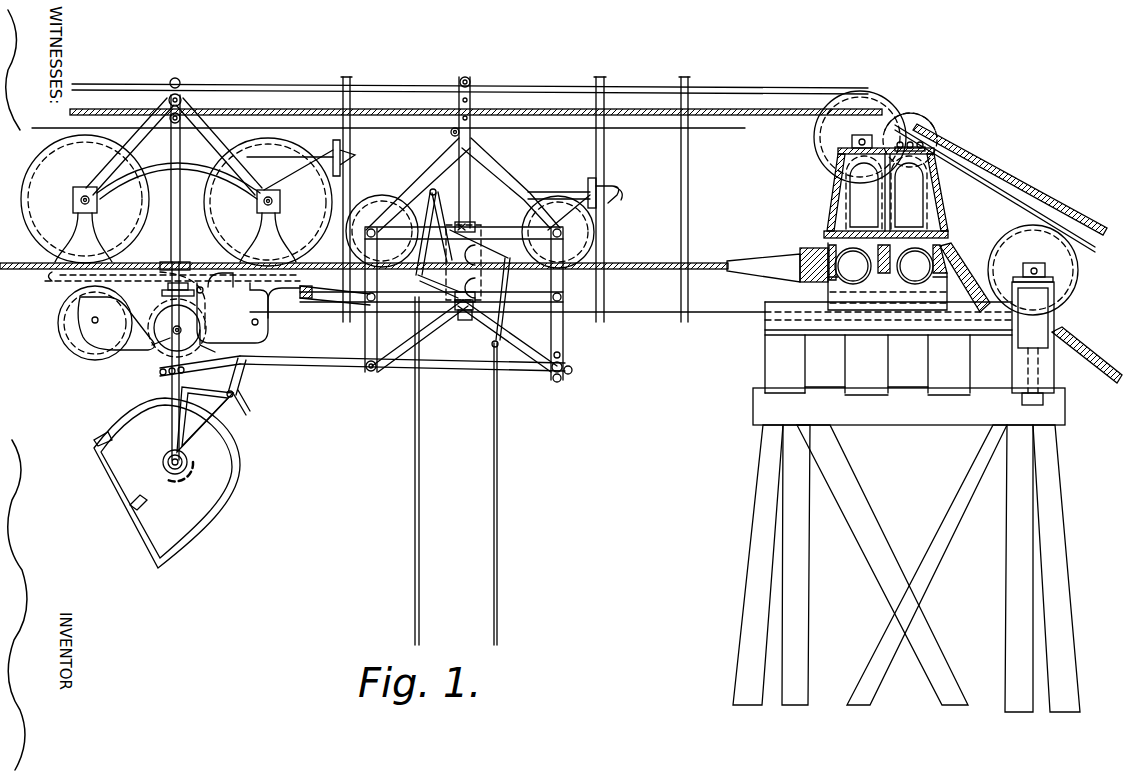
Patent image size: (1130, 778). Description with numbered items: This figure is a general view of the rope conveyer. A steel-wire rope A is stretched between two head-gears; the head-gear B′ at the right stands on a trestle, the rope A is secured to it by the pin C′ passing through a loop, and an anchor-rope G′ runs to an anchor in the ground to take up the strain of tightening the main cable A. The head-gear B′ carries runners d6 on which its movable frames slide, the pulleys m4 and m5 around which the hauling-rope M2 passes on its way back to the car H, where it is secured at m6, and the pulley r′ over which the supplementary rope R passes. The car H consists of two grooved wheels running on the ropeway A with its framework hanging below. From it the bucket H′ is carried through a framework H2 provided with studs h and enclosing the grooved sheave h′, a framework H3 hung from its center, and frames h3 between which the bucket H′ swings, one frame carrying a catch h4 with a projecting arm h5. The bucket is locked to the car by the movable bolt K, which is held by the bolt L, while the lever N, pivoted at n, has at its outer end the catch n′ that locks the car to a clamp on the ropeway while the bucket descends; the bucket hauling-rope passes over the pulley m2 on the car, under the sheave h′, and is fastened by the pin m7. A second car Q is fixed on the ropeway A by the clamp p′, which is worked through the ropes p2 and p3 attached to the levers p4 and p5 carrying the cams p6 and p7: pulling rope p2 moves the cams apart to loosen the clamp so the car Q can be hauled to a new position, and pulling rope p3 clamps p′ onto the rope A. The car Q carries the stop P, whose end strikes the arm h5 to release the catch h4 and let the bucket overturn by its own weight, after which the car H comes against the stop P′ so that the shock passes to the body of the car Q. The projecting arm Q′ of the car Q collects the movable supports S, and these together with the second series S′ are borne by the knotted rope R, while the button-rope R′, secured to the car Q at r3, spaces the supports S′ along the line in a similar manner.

The steel-wire rope A is at (630, 264).
The head-gear B′ is at (748, 572).
The pin C′ is at (812, 250).
The anchor-rope G′ is at (1075, 352).
The car H is at (205, 174).
The bucket H′ is at (167, 483).
The framework H2 is at (181, 370).
The framework H3 is at (165, 345).
The movable bolt K is at (209, 349).
The bolt L is at (205, 290).
The hauling-rope M2 is at (528, 86).
The lever N is at (178, 208).
The stop P is at (318, 370).
The stop P′ is at (335, 286).
The car Q is at (566, 338).
The projecting arm Q′ is at (622, 190).
The supplementary wire rope R is at (543, 115).
The button-rope R′ is at (440, 133).
The movable support S is at (689, 212).
The movable support S′ is at (348, 170).
The runners d6 is at (775, 302).
The studs h is at (170, 296).
The grooved sheave h′ is at (177, 328).
The frame h3 is at (170, 394).
The catch h4 is at (255, 396).
The projecting arm h5 is at (245, 365).
The pulley m2 is at (58, 322).
The pulleys m4 is at (875, 88).
The pulley m5 is at (1064, 298).
The securing point m6 is at (254, 295).
The pin m7 is at (232, 313).
The pivot n is at (85, 272).
The catch n′ is at (154, 274).
The clamp p′ is at (483, 252).
The rope p2 is at (414, 544).
The rope p3 is at (498, 541).
The lever p4 is at (435, 223).
The lever p5 is at (491, 344).
The cam p6 is at (428, 245).
The cam p7 is at (496, 288).
The pulley r′ is at (912, 122).
The securing point r3 is at (455, 128).